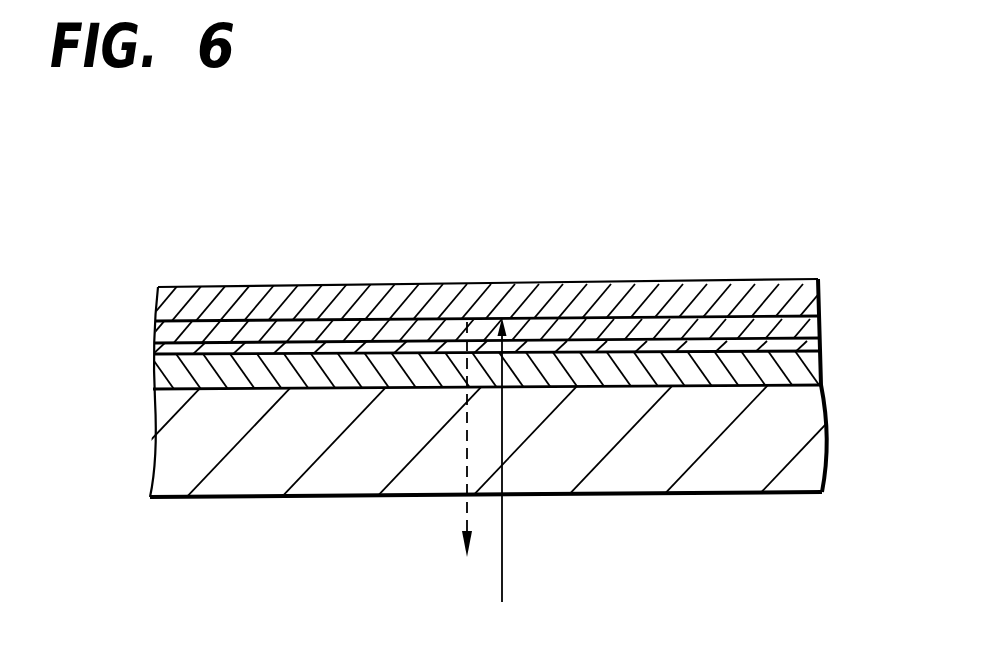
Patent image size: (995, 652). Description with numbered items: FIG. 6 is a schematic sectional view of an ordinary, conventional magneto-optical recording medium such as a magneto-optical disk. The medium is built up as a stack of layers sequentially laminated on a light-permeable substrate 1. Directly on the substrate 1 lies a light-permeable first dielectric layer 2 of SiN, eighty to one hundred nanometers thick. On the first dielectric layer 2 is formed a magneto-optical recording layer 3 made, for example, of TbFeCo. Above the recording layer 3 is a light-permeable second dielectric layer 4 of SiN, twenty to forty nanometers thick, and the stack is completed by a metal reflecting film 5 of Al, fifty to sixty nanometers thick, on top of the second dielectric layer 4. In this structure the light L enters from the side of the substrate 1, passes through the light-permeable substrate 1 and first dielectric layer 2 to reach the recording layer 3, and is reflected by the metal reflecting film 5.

The light-permeable substrate 1 is at (832, 453).
The first dielectric layer 2 is at (822, 382).
The magneto-optical recording layer 3 is at (825, 350).
The second dielectric layer 4 is at (822, 328).
The metal reflecting film 5 is at (800, 288).
The light L is at (503, 533).